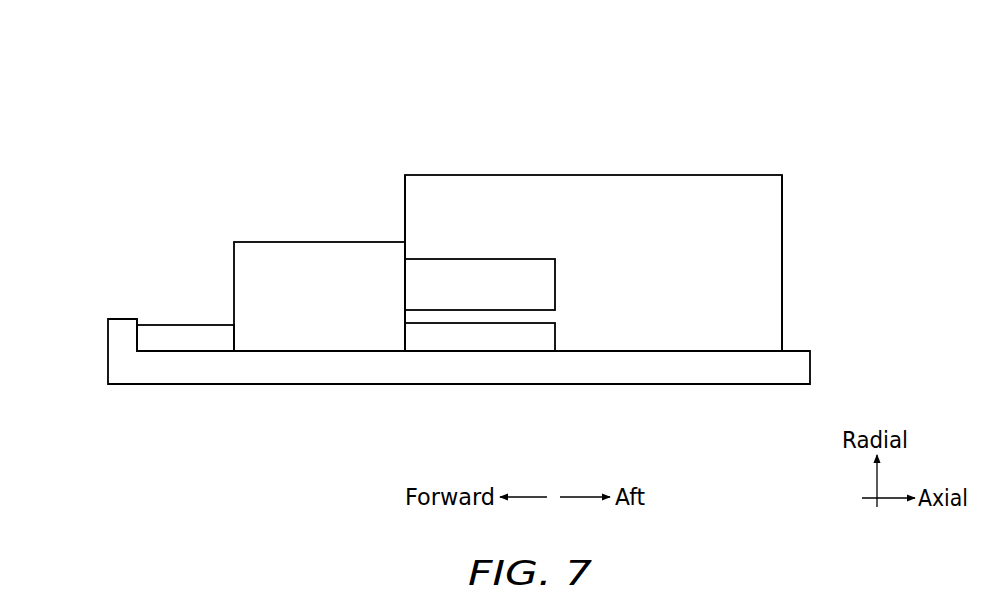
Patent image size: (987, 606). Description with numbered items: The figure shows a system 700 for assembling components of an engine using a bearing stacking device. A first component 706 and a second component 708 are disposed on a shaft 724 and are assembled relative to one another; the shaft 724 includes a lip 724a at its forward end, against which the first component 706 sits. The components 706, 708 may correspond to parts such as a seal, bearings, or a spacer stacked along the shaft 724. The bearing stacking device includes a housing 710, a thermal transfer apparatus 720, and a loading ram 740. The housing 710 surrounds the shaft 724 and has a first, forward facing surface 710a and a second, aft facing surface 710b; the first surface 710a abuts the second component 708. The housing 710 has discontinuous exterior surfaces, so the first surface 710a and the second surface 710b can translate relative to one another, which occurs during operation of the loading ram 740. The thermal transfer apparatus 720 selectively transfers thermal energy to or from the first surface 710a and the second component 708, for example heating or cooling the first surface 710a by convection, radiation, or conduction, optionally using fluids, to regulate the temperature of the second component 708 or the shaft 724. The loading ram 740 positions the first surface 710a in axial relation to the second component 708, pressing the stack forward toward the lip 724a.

The system 700 is at (475, 252).
The first component 706 is at (173, 337).
The second component 708 is at (260, 258).
The housing 710 is at (730, 160).
The first surface 710a is at (405, 207).
The second surface 710b is at (782, 228).
The thermal transfer apparatus 720 is at (542, 277).
The shaft 724 is at (305, 365).
The lip 724a is at (123, 330).
The loading ram 740 is at (540, 340).